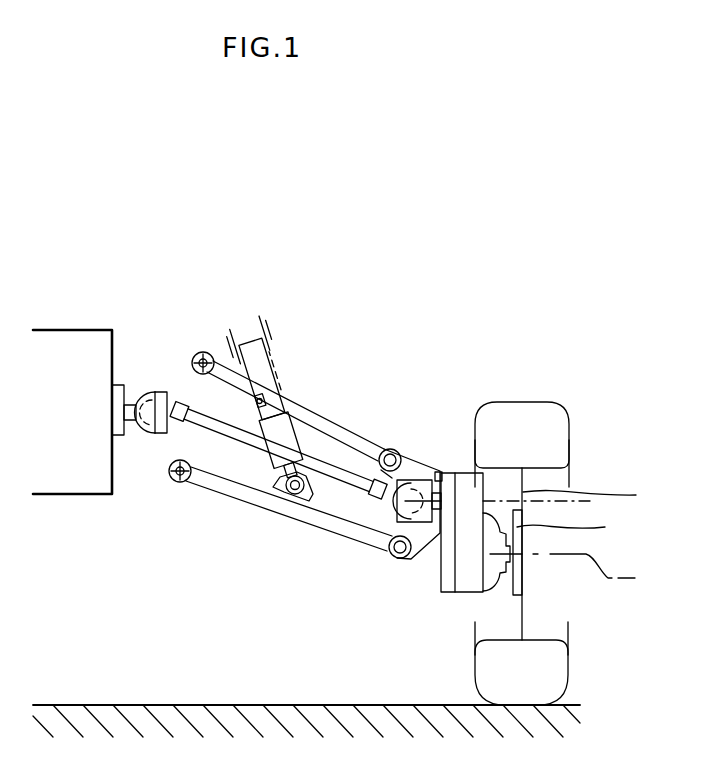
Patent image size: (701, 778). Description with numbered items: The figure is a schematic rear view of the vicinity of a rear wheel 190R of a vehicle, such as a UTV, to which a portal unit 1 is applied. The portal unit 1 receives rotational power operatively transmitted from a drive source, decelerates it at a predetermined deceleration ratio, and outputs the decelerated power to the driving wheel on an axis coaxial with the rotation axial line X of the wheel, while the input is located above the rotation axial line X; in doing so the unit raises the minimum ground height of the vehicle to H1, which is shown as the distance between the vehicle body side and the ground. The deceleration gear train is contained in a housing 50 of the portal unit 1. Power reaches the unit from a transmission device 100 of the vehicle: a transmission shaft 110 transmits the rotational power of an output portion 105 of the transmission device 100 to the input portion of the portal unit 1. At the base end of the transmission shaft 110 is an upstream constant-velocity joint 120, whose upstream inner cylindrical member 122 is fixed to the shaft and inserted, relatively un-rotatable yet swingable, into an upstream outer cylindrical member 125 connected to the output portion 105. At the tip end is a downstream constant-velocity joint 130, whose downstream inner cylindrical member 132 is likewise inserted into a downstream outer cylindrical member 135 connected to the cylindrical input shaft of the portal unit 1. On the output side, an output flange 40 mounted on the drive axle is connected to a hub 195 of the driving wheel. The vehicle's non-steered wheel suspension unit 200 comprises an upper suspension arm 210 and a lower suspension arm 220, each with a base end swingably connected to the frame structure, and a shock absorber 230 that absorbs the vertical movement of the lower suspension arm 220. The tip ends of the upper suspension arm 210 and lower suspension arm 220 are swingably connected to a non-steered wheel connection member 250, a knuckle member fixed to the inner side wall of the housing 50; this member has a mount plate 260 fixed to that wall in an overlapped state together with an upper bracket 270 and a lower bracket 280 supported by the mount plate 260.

The portal unit 1 is at (463, 467).
The output flange 40 is at (572, 552).
The housing 50 is at (448, 596).
The transmission device 100 is at (68, 318).
The output portion 105 is at (118, 397).
The transmission shaft 110 is at (202, 415).
The upstream constant-velocity joint 120 is at (143, 436).
The upstream inner cylindrical member 122 is at (173, 424).
The upstream outer cylindrical member 125 is at (157, 431).
The downstream constant-velocity joint 130 is at (393, 517).
The downstream inner cylindrical member 132 is at (382, 495).
The downstream outer cylindrical member 135 is at (417, 522).
The rear wheel 190R is at (577, 477).
The hub 195 is at (598, 495).
The non-steered wheel suspension unit 200 is at (347, 417).
The upper suspension arm 210 is at (357, 438).
The lower suspension arm 220 is at (263, 505).
The shock absorber 230 is at (262, 362).
The non-steered wheel connection member 250 is at (432, 557).
The mount plate 260 is at (438, 472).
The upper bracket 270 is at (395, 447).
The lower bracket 280 is at (397, 558).
The rotation axial line X is at (592, 573).
The minimum ground height H1 is at (73, 494).